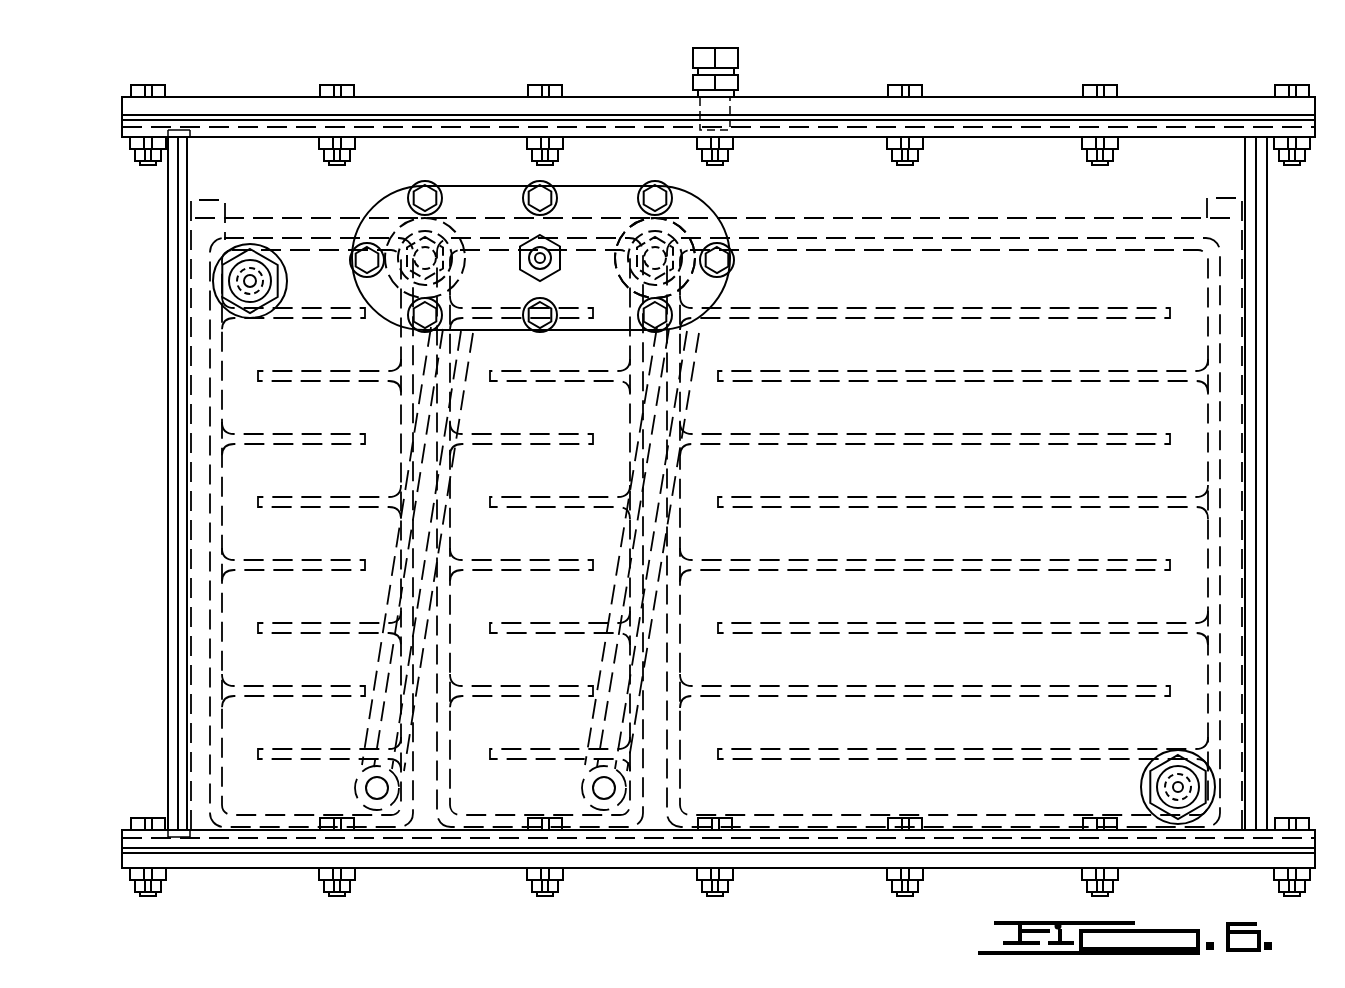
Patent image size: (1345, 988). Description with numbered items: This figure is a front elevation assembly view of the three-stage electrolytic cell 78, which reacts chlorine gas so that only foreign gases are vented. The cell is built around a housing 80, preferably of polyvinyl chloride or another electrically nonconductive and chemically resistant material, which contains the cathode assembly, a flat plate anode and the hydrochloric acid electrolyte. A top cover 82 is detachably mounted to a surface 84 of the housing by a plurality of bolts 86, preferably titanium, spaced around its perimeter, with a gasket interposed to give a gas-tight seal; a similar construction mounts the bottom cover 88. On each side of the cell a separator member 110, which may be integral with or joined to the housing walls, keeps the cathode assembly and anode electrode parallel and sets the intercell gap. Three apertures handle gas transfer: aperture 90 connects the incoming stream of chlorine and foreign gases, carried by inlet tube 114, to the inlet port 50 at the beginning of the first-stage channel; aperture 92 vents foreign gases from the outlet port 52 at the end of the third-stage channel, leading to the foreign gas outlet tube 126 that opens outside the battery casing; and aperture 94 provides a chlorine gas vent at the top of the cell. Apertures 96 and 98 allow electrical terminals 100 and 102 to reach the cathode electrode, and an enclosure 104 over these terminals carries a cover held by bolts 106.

The inlet port 50 is at (1240, 740).
The outlet port 52 is at (203, 302).
The three-stage electrolytic cell 78 is at (703, 483).
The housing 80 is at (168, 495).
The top cover 82 is at (718, 93).
The surface of the housing 84 is at (275, 122).
The bolts 86 is at (1112, 90).
The bottom cover 88 is at (130, 856).
The aperture 90 is at (1197, 787).
The aperture 92 is at (213, 296).
The aperture 94 is at (740, 97).
The aperture 96 is at (366, 218).
The aperture 98 is at (680, 224).
The electrical terminal 100 is at (445, 205).
The electrical terminal 102 is at (733, 250).
The enclosure 104 is at (686, 190).
The bolts 106 is at (553, 198).
The separator member 110 is at (185, 211).
The inlet tube 114 is at (1165, 779).
The foreign gas outlet tube 126 is at (251, 314).